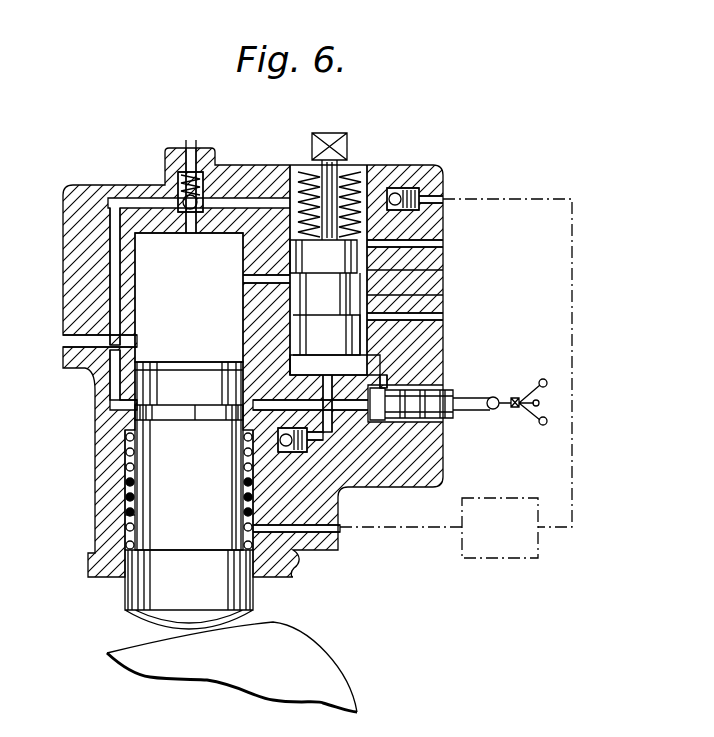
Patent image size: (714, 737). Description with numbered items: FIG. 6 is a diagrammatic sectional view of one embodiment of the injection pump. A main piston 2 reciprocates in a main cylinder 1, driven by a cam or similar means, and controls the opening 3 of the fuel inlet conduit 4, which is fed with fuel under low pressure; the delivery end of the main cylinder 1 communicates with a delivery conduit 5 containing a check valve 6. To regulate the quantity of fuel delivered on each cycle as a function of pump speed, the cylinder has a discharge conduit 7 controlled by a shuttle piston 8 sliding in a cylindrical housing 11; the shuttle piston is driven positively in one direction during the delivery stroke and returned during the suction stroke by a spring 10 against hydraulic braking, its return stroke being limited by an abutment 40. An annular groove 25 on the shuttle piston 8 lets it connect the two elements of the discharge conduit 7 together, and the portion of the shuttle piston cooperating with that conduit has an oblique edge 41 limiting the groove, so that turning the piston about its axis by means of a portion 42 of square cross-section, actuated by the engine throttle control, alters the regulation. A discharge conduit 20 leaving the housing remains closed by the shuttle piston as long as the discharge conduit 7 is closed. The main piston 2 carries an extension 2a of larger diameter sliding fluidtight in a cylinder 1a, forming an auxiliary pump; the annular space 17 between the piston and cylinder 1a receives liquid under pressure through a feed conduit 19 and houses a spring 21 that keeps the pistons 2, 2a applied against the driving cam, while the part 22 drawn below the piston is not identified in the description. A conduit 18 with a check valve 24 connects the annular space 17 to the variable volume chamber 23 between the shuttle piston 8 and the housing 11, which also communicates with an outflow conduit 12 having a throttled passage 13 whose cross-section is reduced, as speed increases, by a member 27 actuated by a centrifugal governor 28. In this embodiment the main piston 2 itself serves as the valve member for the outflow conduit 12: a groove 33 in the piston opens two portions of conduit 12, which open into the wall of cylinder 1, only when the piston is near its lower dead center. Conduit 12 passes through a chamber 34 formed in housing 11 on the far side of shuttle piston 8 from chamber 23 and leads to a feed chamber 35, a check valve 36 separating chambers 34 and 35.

The main cylinder 1 is at (194, 294).
The cylinder 1a is at (128, 520).
The main piston 2 is at (186, 486).
The extension 2a is at (188, 593).
The opening 3 is at (138, 345).
The fuel inlet conduit 4 is at (108, 340).
The delivery conduit 5 is at (191, 147).
The check valve 6 is at (213, 176).
The discharge conduit 7 is at (252, 279).
The shuttle piston 8 is at (328, 266).
The spring 10 is at (370, 188).
The cylindrical housing 11 is at (390, 358).
The outflow conduit 12 is at (115, 290).
The throttled passage 13 is at (443, 383).
The annular space 17 is at (126, 452).
The conduit 18 is at (356, 412).
The feed conduit 19 is at (340, 535).
The discharge conduit 20 is at (443, 315).
The spring 21 is at (126, 503).
The workpiece 22 is at (303, 650).
The variable volume chamber 23 is at (344, 373).
The check valve 24 is at (300, 455).
The annular groove 25 is at (443, 295).
The member 27 is at (452, 418).
The governor 28 is at (527, 413).
The groove 33 is at (196, 409).
The chamber 34 is at (362, 180).
The feed chamber 35 is at (470, 547).
The check valve 36 is at (422, 196).
The abutment 40 is at (292, 354).
The oblique edge 41 is at (443, 273).
The portion of square cross-section 42 is at (330, 135).